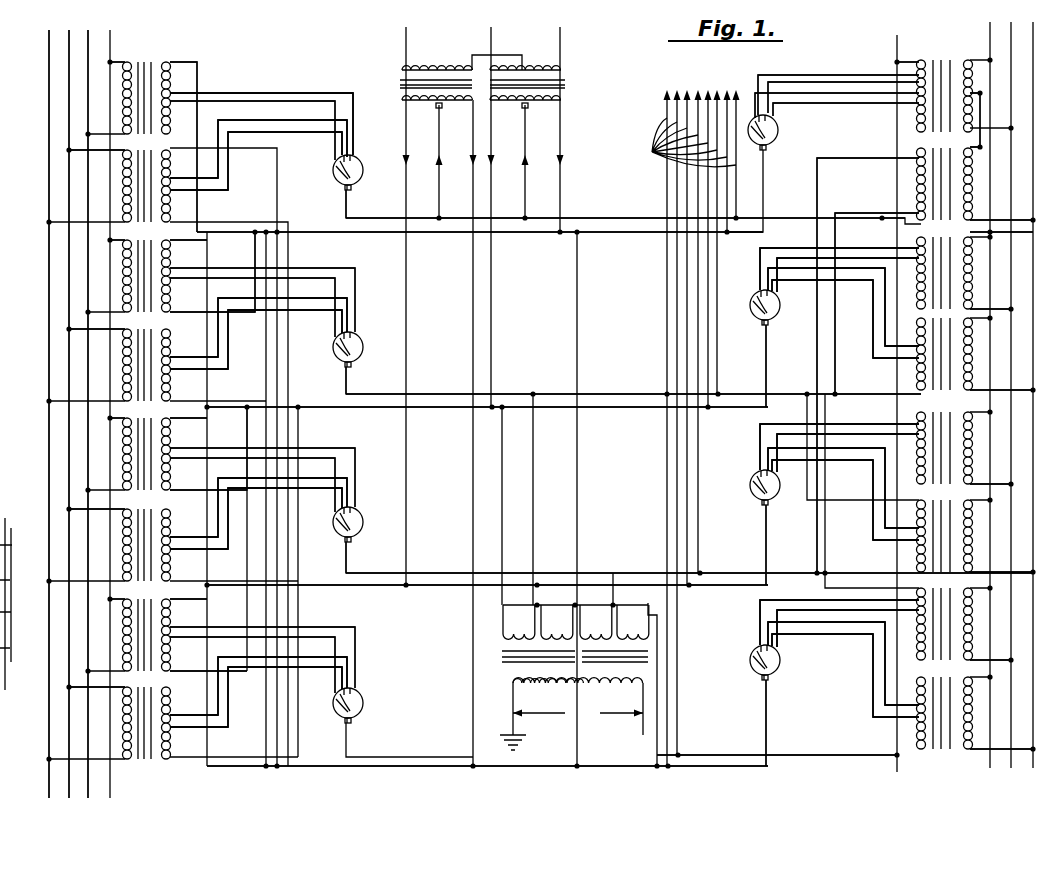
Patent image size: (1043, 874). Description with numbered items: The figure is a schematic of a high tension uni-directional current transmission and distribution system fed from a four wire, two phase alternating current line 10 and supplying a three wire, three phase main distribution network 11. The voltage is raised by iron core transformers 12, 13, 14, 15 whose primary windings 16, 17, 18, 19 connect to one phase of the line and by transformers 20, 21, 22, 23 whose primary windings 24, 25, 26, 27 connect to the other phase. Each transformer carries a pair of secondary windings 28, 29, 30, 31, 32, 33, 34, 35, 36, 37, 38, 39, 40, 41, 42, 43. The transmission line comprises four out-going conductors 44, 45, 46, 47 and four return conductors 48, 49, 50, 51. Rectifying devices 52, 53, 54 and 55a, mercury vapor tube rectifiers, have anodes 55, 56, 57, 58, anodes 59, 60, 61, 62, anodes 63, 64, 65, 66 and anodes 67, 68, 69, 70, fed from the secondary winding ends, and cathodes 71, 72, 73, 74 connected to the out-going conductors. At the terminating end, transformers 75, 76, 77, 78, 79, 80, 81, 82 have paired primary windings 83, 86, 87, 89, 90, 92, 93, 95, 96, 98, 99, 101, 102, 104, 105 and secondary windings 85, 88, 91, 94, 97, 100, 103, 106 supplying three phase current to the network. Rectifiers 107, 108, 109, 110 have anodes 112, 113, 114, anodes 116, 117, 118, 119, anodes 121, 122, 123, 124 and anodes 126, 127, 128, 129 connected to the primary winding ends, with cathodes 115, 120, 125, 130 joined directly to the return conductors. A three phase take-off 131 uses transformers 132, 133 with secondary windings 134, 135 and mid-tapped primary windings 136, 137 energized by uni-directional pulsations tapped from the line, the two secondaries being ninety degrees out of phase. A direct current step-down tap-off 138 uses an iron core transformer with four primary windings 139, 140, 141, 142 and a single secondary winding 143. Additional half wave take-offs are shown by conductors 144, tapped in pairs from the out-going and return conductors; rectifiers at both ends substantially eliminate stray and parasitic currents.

The two phase alternating current line 10 is at (88, 230).
The main distribution network 11 is at (1000, 232).
The transformer 12 is at (137, 87).
The transformer 13 is at (137, 272).
The transformer 14 is at (137, 438).
The transformer 15 is at (137, 618).
The primary winding 16 is at (122, 98).
The primary winding 17 is at (122, 291).
The primary winding 18 is at (122, 462).
The primary winding 19 is at (122, 640).
The transformer 20 is at (137, 175).
The transformer 21 is at (137, 350).
The transformer 22 is at (137, 530).
The transformer 23 is at (137, 706).
The primary winding 24 is at (122, 196).
The primary winding 25 is at (122, 371).
The primary winding 26 is at (122, 550).
The primary winding 27 is at (122, 728).
The secondary winding 28 is at (170, 80).
The secondary winding 29 is at (170, 110).
The secondary winding 30 is at (180, 247).
The secondary winding 31 is at (168, 300).
The secondary winding 32 is at (170, 438).
The secondary winding 33 is at (170, 473).
The secondary winding 34 is at (170, 612).
The secondary winding 35 is at (170, 650).
The secondary winding 36 is at (170, 163).
The secondary winding 37 is at (170, 203).
The secondary winding 38 is at (170, 345).
The secondary winding 39 is at (170, 383).
The secondary winding 40 is at (170, 530).
The secondary winding 41 is at (170, 563).
The secondary winding 42 is at (170, 705).
The secondary winding 43 is at (170, 742).
The out-going conductor 44 is at (630, 216).
The out-going conductor 45 is at (626, 393).
The out-going conductor 46 is at (636, 560).
The out-going conductor 47 is at (726, 742).
The return conductor 48 is at (610, 238).
The return conductor 49 is at (630, 407).
The return conductor 50 is at (718, 586).
The return conductor 51 is at (714, 768).
The rectifying device 52 is at (360, 170).
The rectifying device 53 is at (362, 352).
The rectifying device 54 is at (362, 526).
The anode 55 is at (340, 160).
The rectifying device 55a is at (362, 708).
The anode 56 is at (338, 168).
The anode 57 is at (342, 176).
The anode 58 is at (346, 186).
The anode 59 is at (340, 337).
The anode 60 is at (338, 345).
The anode 61 is at (342, 352).
The anode 62 is at (346, 362).
The anode 63 is at (340, 512).
The anode 64 is at (338, 520).
The anode 65 is at (346, 528).
The anode 66 is at (354, 514).
The anode 67 is at (340, 693).
The anode 68 is at (338, 700).
The anode 69 is at (346, 706).
The anode 70 is at (358, 700).
The cathode 71 is at (353, 188).
The cathode 72 is at (353, 366).
The cathode 73 is at (353, 541).
The cathode 74 is at (353, 724).
The transformer 75 is at (948, 75).
The transformer 76 is at (970, 168).
The transformer 77 is at (970, 258).
The transformer 78 is at (955, 345).
The transformer 79 is at (970, 437).
The transformer 80 is at (955, 520).
The transformer 81 is at (955, 610).
The transformer 82 is at (955, 690).
The primary winding 83 is at (897, 62).
The secondary winding 85 is at (978, 93).
The primary winding 86 is at (919, 165).
The primary winding 87 is at (919, 193).
The secondary winding 88 is at (970, 193).
The primary winding 89 is at (919, 255).
The primary winding 90 is at (919, 292).
The secondary winding 91 is at (970, 280).
The primary winding 92 is at (919, 328).
The primary winding 93 is at (919, 380).
The secondary winding 94 is at (970, 365).
The primary winding 95 is at (919, 430).
The primary winding 96 is at (919, 468).
The secondary winding 97 is at (970, 460).
The primary winding 98 is at (919, 505).
The primary winding 99 is at (919, 555).
The secondary winding 100 is at (970, 548).
The primary winding 101 is at (919, 592).
The primary winding 102 is at (919, 640).
The secondary winding 103 is at (970, 640).
The primary winding 104 is at (919, 690).
The primary winding 105 is at (919, 735).
The secondary winding 106 is at (970, 720).
The rectifying device 107 is at (755, 142).
The rectifying device 108 is at (762, 322).
The rectifying device 109 is at (760, 492).
The rectifying device 110 is at (760, 667).
The anode 112 is at (777, 135).
The anode 113 is at (775, 125).
The anode 114 is at (770, 118).
The cathode 115 is at (768, 148).
The anode 116 is at (752, 294).
The anode 117 is at (756, 304).
The anode 118 is at (760, 306).
The anode 119 is at (778, 298).
The cathode 120 is at (772, 324).
The anode 121 is at (752, 474).
The anode 122 is at (756, 482).
The anode 123 is at (775, 480).
The anode 124 is at (773, 480).
The cathode 125 is at (772, 505).
The anode 126 is at (752, 652).
The anode 127 is at (756, 660).
The anode 128 is at (775, 655).
The anode 129 is at (773, 654).
The cathode 130 is at (772, 680).
The three phase take-off 131 is at (486, 33).
The transformer 132 is at (410, 98).
The transformer 133 is at (565, 85).
The secondary winding 134 is at (416, 66).
The secondary winding 135 is at (532, 66).
The primary winding 136 is at (455, 105).
The primary winding 137 is at (540, 105).
The uni-directional step-down tap-off 138 is at (595, 747).
The primary winding 139 is at (517, 632).
The primary winding 140 is at (554, 632).
The primary winding 141 is at (596, 632).
The primary winding 142 is at (640, 632).
The secondary winding 143 is at (538, 683).
The conductors 144 is at (655, 142).